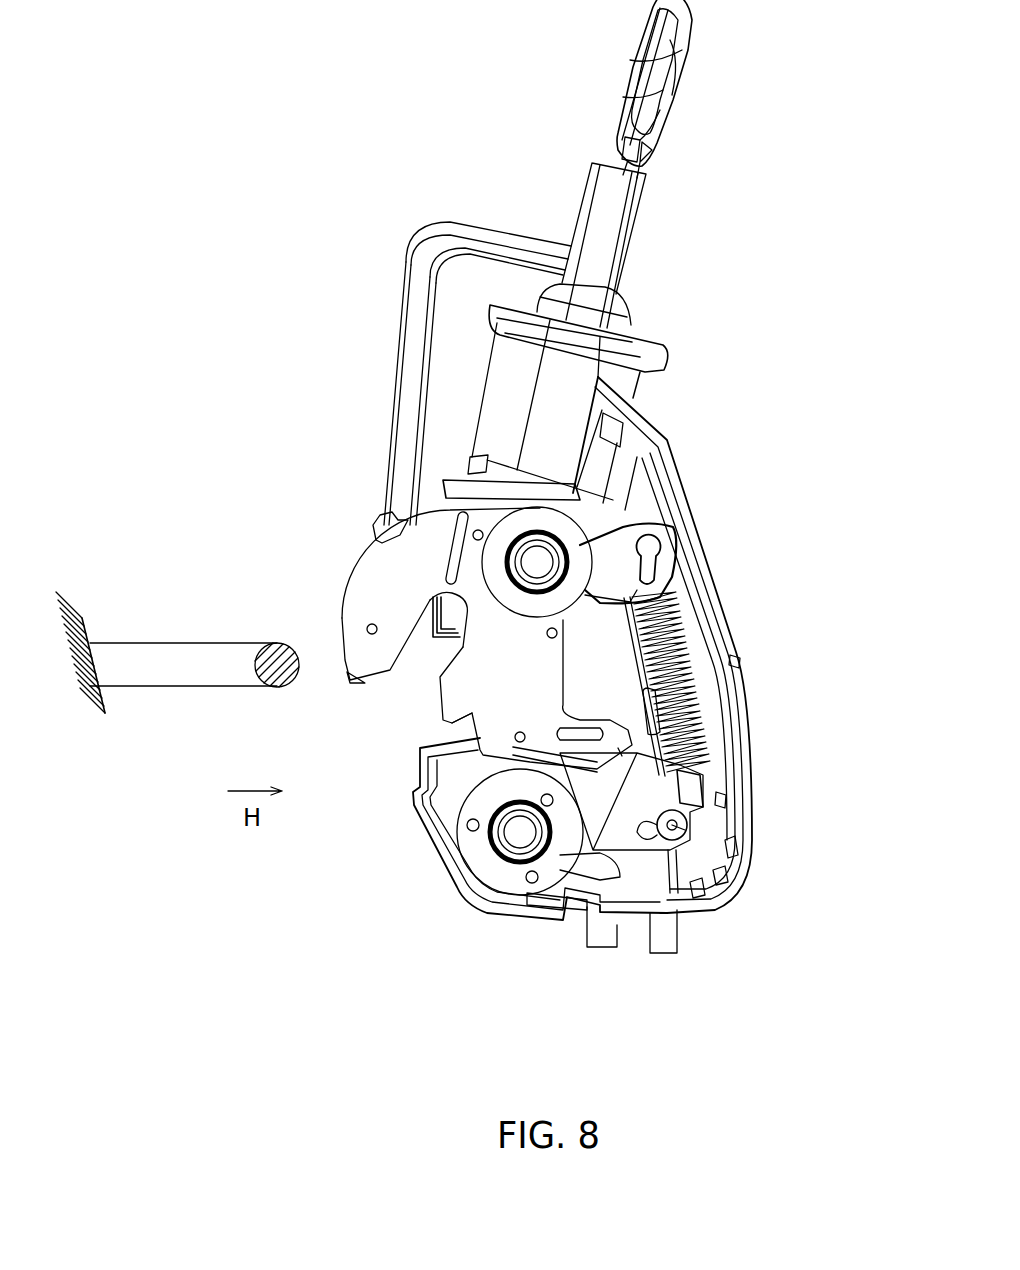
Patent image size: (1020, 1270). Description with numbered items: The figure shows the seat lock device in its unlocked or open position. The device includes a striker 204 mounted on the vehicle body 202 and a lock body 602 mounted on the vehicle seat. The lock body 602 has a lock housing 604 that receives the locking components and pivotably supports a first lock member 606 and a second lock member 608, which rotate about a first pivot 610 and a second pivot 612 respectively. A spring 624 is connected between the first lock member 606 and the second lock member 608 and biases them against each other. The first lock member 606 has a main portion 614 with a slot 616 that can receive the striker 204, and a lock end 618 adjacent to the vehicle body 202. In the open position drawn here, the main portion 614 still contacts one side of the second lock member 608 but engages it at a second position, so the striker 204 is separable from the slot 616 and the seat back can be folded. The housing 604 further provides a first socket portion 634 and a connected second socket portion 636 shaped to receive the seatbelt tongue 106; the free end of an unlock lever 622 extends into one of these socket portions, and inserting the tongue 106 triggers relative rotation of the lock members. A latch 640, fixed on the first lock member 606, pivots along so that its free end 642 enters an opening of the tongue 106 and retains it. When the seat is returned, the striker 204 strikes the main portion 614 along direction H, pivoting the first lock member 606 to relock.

The tongue 106 is at (690, 50).
The vehicle body 202 is at (98, 713).
The striker 204 is at (163, 641).
The lock body 602 is at (729, 561).
The lock housing 604 is at (690, 492).
The first lock member 606 is at (434, 706).
The second lock member 608 is at (620, 870).
The first pivot 610 is at (545, 572).
The second pivot 612 is at (512, 826).
The main portion 614 is at (532, 697).
The slot 616 is at (440, 670).
The lock end 618 is at (406, 607).
The unlock lever 622 is at (683, 620).
The spring 624 is at (700, 714).
The first socket portion 634 is at (640, 400).
The second socket portion 636 is at (636, 246).
The latch 640 is at (398, 394).
The free end 642 is at (520, 236).